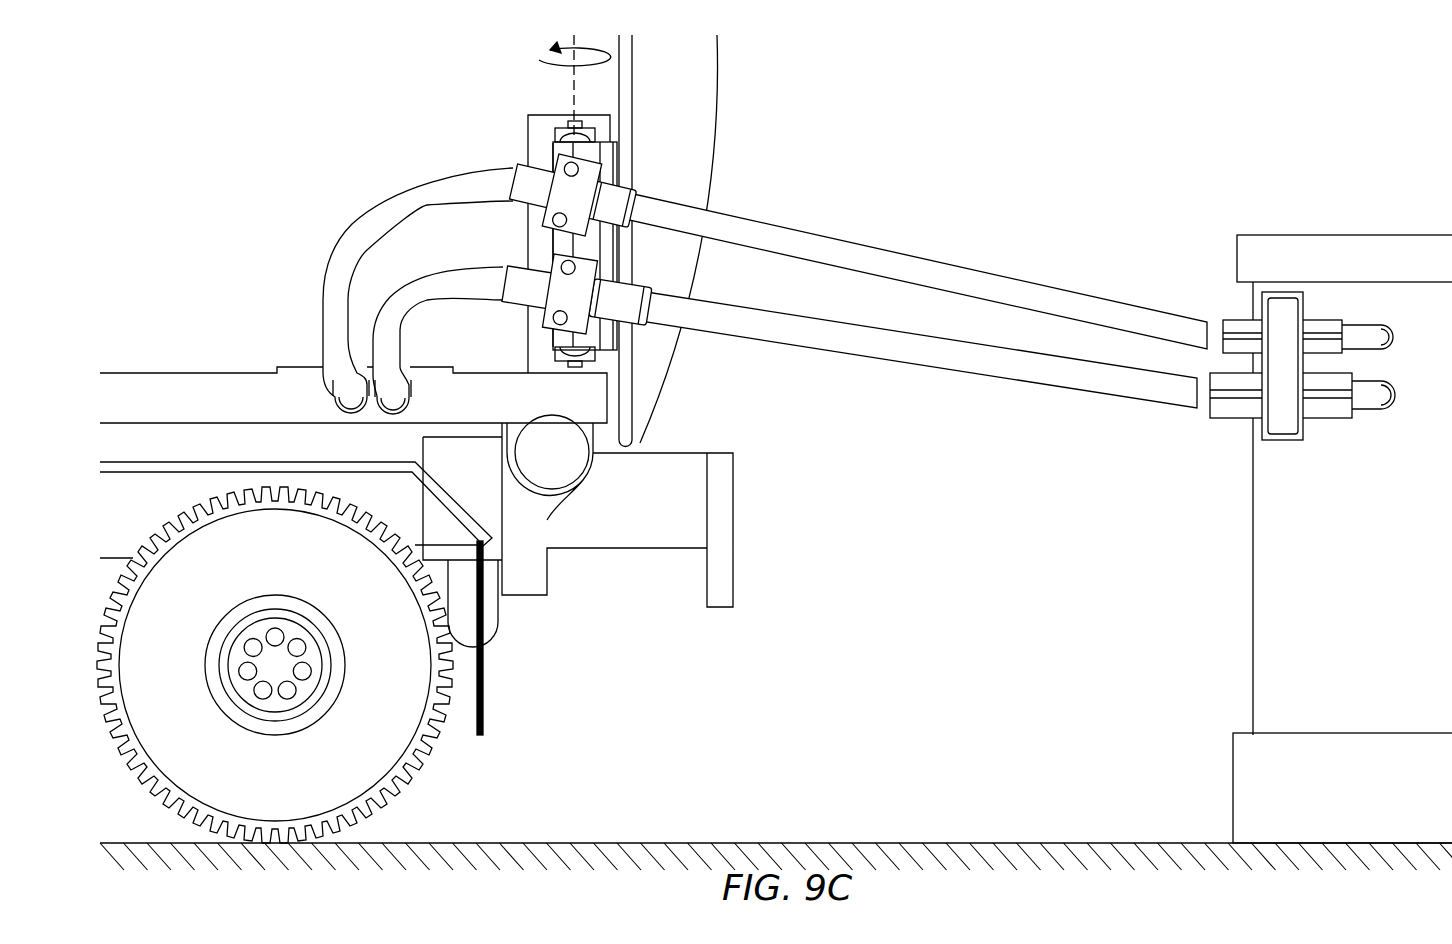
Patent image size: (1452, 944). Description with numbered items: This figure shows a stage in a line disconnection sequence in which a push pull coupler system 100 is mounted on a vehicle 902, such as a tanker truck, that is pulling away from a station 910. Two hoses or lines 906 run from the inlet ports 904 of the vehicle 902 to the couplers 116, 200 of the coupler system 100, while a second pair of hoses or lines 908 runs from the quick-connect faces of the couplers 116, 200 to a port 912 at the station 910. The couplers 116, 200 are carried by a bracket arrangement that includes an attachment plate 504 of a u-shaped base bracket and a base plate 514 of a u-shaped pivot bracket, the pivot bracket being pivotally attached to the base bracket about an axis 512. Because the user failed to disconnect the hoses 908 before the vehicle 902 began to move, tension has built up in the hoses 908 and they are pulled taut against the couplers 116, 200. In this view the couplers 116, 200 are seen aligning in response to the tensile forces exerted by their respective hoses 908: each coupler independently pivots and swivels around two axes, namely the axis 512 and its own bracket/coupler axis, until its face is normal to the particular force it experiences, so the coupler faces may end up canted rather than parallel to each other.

The push pull coupler system 100 is at (485, 99).
The coupler 116 is at (563, 187).
The coupler 200 is at (560, 297).
The attachment plate 504 is at (562, 245).
The axis 512 is at (577, 77).
The base plate 514 is at (603, 250).
The vehicle 902 is at (253, 332).
The inlet ports 904 is at (337, 407).
The hoses or lines 906 is at (392, 192).
The hoses or lines 908 is at (935, 262).
The station 910 is at (1379, 543).
The port 912 is at (1283, 310).